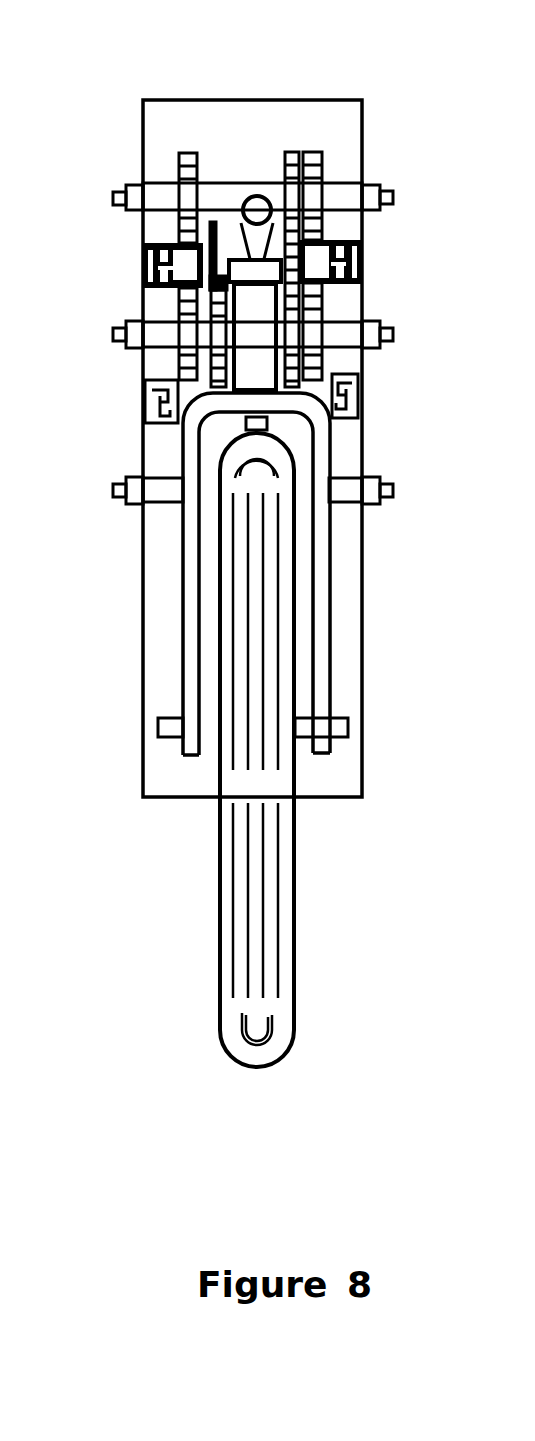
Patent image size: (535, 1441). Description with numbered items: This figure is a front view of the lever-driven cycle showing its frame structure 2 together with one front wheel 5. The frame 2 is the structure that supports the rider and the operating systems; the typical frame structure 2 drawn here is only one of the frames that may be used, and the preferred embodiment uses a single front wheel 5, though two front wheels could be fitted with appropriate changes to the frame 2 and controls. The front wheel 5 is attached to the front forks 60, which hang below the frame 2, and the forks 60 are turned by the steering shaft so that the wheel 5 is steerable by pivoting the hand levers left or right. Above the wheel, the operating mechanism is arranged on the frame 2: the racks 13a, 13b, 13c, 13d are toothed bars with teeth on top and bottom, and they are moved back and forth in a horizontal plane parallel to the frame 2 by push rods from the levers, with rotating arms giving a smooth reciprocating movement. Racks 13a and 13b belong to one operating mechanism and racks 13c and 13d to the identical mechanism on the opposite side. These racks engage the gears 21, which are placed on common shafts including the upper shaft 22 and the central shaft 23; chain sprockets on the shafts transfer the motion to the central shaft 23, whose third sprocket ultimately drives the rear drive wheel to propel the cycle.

The frame 2 is at (240, 98).
The gears 21 is at (140, 182).
The upper shaft 22 is at (160, 348).
The central shaft 23 is at (163, 496).
The rack 13a is at (362, 257).
The rack 13b is at (140, 275).
The rack 13c is at (352, 398).
The rack 13d is at (140, 422).
The front forks 60 is at (182, 567).
The front wheel 5 is at (300, 750).